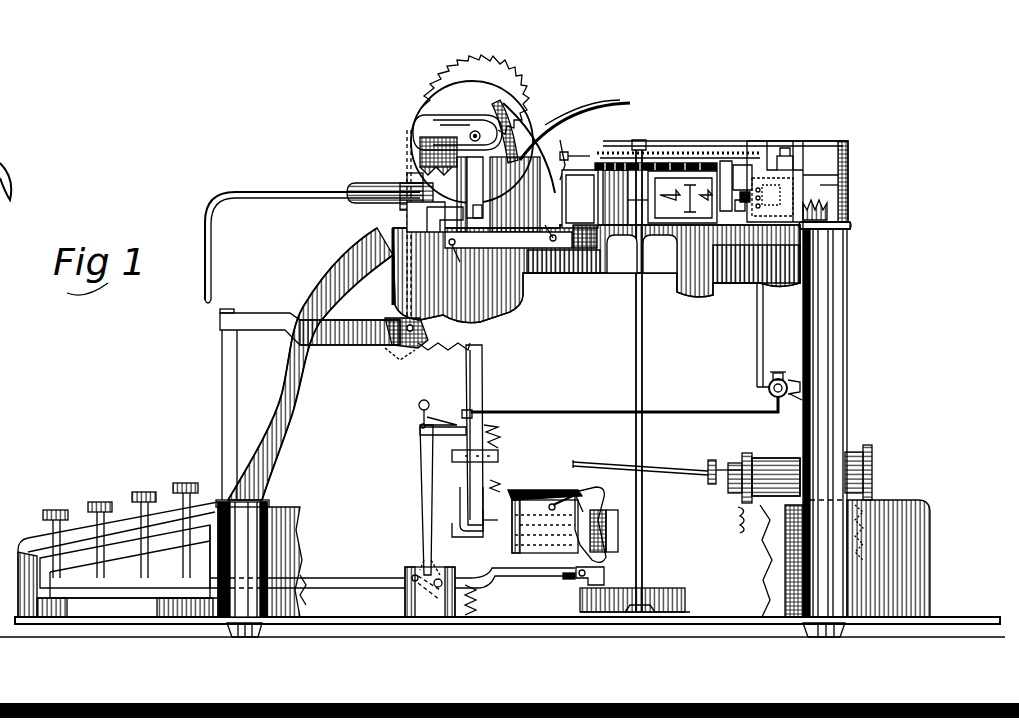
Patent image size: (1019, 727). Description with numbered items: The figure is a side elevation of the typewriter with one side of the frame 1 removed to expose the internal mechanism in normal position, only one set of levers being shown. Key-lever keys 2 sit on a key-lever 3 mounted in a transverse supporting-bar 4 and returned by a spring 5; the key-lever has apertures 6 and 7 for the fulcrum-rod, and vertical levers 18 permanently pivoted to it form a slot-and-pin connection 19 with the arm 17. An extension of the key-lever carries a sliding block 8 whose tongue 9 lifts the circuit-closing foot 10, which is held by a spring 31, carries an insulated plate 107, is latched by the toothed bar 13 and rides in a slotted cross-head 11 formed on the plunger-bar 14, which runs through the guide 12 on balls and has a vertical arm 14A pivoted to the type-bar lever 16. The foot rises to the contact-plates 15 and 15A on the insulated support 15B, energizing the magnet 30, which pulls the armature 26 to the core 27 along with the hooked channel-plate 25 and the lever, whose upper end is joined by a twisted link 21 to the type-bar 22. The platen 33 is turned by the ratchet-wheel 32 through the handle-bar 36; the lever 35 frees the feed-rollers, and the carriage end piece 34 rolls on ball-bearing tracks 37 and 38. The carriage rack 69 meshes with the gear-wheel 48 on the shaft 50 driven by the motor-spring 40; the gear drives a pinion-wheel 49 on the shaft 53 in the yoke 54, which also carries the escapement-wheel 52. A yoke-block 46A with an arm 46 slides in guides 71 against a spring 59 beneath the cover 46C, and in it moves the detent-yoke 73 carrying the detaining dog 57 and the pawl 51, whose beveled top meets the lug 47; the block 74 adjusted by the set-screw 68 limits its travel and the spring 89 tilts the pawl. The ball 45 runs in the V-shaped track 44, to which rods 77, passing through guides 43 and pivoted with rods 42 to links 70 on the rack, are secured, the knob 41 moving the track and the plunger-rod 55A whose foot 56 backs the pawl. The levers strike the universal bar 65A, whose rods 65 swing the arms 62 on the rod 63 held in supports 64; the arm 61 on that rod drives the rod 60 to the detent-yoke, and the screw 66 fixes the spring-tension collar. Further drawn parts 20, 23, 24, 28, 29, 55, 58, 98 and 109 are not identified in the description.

The frame 1 is at (345, 262).
The key-lever keys 2 is at (55, 510).
The key-lever 3 is at (307, 580).
The supporting-bar 4 is at (405, 600).
The spring 5 is at (478, 598).
The aperture 6 is at (410, 572).
The aperture 7 is at (445, 578).
The sliding block 8 is at (578, 580).
The tongue 9 is at (604, 574).
The circuit-closing foot 10 is at (600, 500).
The slotted cross-head 11 is at (618, 522).
The guide 12 is at (545, 558).
The latch-bar 13 is at (578, 490).
The plunger-bar 14 is at (472, 535).
The vertical arm 14A is at (480, 526).
The contact-plate 15 is at (540, 495).
The contact-plate 15A is at (516, 535).
The insulated support 15B is at (545, 500).
The type-bar lever 16 is at (484, 380).
The arm 17 is at (420, 410).
The vertical lever 18 is at (420, 476).
The slot-and-pin connection 19 is at (420, 426).
The bar 20 is at (498, 456).
The link 21 is at (448, 350).
The type-bar 22 is at (290, 320).
The post 23 is at (222, 350).
The block 24 is at (398, 338).
The hooked channel-plate 25 is at (664, 466).
The armature 26 is at (710, 484).
The core 27 is at (740, 497).
The spring hook 28 is at (481, 512).
The spring 29 is at (501, 496).
The magnet 30 is at (875, 460).
The spring 31 is at (606, 530).
The ratchet-wheel 32 is at (480, 90).
The platen 33 is at (452, 90).
The carriage end piece 34 is at (510, 118).
The lever 35 is at (425, 118).
The handle-bar 36 is at (275, 192).
The ball-bearing track 37 is at (485, 310).
The ball-bearing track 38 is at (562, 275).
The motor-spring 40 is at (664, 590).
The knob 41 is at (418, 152).
The rod 42 is at (562, 125).
The guide 43 is at (565, 130).
The track 44 is at (580, 185).
The ball 45 is at (672, 160).
The arm 46 is at (660, 140).
The yoke-block 46A is at (848, 152).
The cover 46C is at (851, 224).
The lug 47 is at (750, 172).
The gear-wheel 48 is at (693, 156).
The pinion-wheel 49 is at (848, 195).
The shaft 50 is at (644, 379).
The detent 51 is at (674, 270).
The escapement-wheel 52 is at (690, 212).
The shaft 53 is at (640, 212).
The yoke 54 is at (724, 160).
The box 55 is at (580, 199).
The plunger-rod 55A is at (618, 197).
The foot 56 is at (742, 163).
The detaining dog 57 is at (810, 240).
The body 58 is at (737, 283).
The spring 59 is at (845, 170).
The rod 60 is at (765, 300).
The arm 61 is at (768, 388).
The arm 62 is at (775, 405).
The rod 63 is at (800, 396).
The support 64 is at (800, 385).
The rod 65 is at (553, 410).
The universal bar 65A is at (464, 410).
The screw 66 is at (778, 372).
The set-screw 68 is at (793, 156).
The rack 69 is at (584, 225).
The link 70 is at (548, 168).
The guide 71 is at (846, 236).
The detent-yoke 73 is at (760, 178).
The block 74 is at (828, 205).
The rod 77 is at (590, 153).
The spring 89 is at (745, 190).
The bar 98 is at (550, 238).
The plate 107 is at (560, 500).
The rod end 109 is at (576, 467).